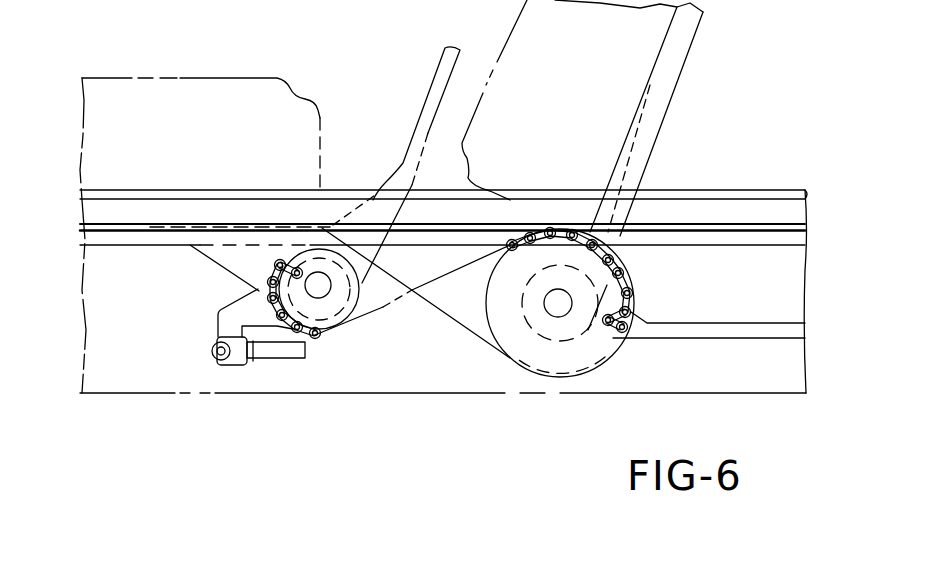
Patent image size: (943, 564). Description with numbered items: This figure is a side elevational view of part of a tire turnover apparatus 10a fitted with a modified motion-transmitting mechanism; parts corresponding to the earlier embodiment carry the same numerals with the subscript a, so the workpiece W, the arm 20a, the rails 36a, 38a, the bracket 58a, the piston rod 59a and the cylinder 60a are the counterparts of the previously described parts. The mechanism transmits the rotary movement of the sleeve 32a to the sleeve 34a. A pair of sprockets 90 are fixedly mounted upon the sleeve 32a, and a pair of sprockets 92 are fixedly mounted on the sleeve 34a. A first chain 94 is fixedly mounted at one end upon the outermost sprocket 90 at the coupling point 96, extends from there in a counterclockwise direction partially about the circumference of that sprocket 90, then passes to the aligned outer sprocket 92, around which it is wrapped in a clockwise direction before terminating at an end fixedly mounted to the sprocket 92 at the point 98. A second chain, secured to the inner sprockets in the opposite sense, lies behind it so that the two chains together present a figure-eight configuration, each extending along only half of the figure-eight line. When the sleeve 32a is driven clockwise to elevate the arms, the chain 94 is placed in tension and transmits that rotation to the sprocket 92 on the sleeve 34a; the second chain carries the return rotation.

The frame 10a is at (393, 380).
The workpiece W is at (238, 77).
The arm 20a is at (727, 223).
The sleeve 32a is at (350, 312).
The sleeve 34a is at (552, 318).
The upper rail 36a is at (134, 246).
The lower rail 38a is at (745, 323).
The bracket 58a is at (218, 308).
The piston rod 59a is at (272, 366).
The cylinder 60a is at (210, 353).
The sprocket 90 is at (322, 246).
The sprocket 92 is at (521, 349).
The first chain 94 is at (316, 337).
The fixed coupling point 96 is at (294, 270).
The fixed end mounting 98 is at (615, 330).